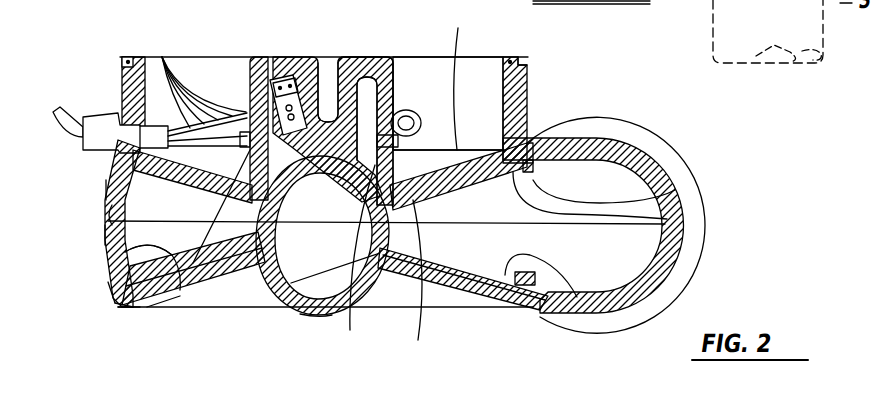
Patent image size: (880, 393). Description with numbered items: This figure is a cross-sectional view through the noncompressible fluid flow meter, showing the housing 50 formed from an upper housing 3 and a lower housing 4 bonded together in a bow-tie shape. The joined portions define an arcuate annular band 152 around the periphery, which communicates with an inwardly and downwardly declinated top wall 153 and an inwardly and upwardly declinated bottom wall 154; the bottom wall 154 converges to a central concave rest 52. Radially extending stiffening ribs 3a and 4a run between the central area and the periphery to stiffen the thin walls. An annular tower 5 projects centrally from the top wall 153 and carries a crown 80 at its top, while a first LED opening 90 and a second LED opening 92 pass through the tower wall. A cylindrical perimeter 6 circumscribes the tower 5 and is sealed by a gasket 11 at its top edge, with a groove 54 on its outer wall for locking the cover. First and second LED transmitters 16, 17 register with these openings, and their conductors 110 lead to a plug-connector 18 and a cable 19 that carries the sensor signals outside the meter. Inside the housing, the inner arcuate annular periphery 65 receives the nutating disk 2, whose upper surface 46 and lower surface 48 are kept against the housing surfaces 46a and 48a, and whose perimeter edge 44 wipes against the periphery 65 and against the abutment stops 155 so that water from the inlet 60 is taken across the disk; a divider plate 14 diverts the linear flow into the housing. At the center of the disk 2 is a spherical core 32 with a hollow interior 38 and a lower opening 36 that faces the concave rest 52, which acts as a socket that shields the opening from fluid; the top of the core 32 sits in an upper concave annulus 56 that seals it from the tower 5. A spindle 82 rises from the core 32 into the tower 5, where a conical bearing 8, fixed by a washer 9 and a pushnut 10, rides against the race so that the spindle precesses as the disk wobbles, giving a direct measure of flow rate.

The nutating disk 2 is at (480, 340).
The upper housing 3 is at (107, 172).
The stiffening ribs 3a is at (462, 148).
The lower housing 4 is at (108, 282).
The stiffening ribs 4a is at (405, 300).
The annular tower 5 is at (407, 110).
The cylindrical perimeter 6 is at (526, 98).
The conical bearing 8 is at (288, 105).
The washer 9 is at (250, 78).
The pushnut 10 is at (292, 62).
The gasket 11 is at (515, 58).
The divider plate 14 is at (498, 307).
The first LED transmitter 16 is at (197, 292).
The second LED transmitter 17 is at (470, 77).
The plug-connector 18 is at (152, 118).
The cable 19 is at (96, 117).
The spherical core 32 is at (223, 275).
The lower opening 36 is at (300, 312).
The hollow interior 38 is at (347, 263).
The perimeter edge 44 is at (80, 278).
The upper surface 46 is at (110, 252).
The upper housing surface 46a is at (420, 350).
The lower surface 48 is at (442, 322).
The lower housing surface 48a is at (147, 307).
The housing 50 is at (105, 233).
The concave rest 52 is at (300, 316).
The groove 54 is at (122, 70).
The upper concave annulus 56 is at (350, 330).
The inlet 60 is at (635, 262).
The inner arcuate annular periphery 65 is at (108, 212).
The crown 80 is at (367, 85).
The spindle 82 is at (327, 60).
The first LED opening 90 is at (350, 62).
The second LED opening 92 is at (243, 112).
The conductors 110 is at (162, 56).
The arcuate annular band 152 is at (116, 305).
The top wall 153 is at (106, 190).
The bottom wall 154 is at (133, 308).
The abutment stop 155 is at (712, 188).